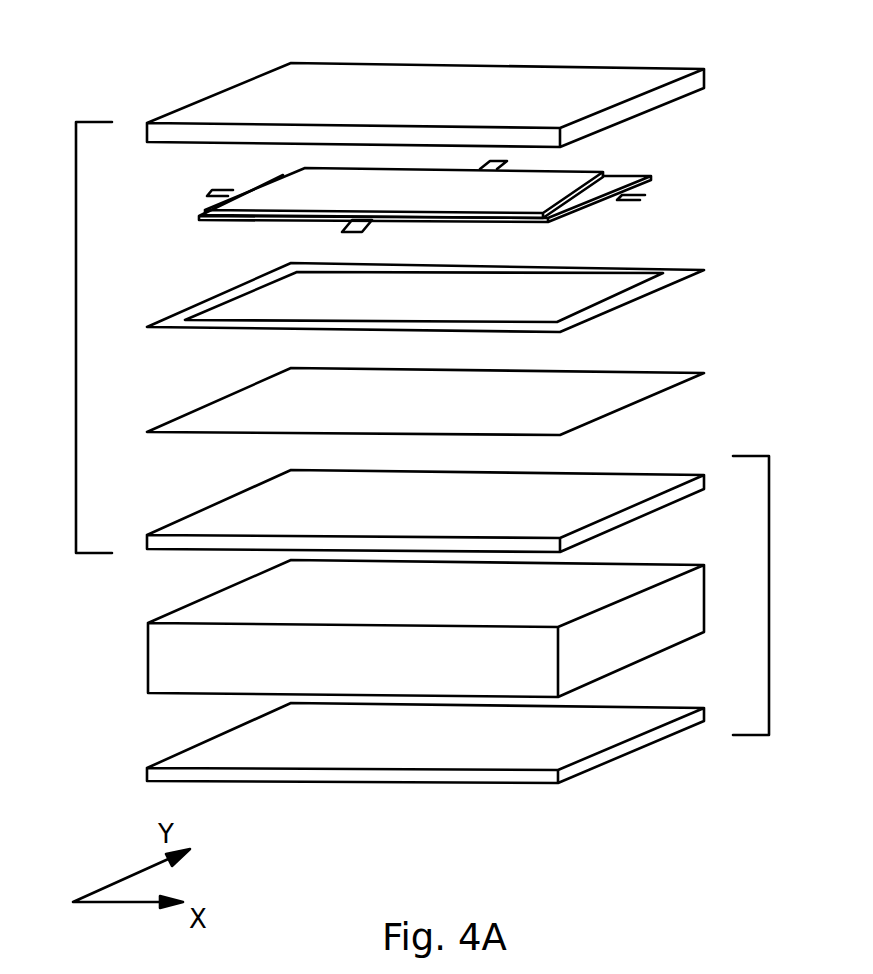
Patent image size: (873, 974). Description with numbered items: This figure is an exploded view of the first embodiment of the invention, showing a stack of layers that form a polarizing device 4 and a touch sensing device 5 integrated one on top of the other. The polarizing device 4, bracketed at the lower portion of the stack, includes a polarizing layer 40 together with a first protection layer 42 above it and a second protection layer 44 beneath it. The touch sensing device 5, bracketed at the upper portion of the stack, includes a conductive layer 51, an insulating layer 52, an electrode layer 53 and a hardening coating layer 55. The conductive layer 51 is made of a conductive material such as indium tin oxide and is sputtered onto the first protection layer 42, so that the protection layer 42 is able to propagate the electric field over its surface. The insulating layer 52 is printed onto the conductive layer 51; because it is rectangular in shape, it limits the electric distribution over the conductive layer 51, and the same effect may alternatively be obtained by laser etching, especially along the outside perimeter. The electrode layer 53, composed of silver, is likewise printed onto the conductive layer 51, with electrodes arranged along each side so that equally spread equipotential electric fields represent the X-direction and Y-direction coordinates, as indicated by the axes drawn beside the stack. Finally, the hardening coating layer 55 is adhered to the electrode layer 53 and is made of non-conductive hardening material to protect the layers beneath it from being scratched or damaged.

The hardening coating layer 55 is at (608, 78).
The electrode layer 53 is at (612, 173).
The insulating layer 52 is at (670, 268).
The conductive layer 51 is at (622, 373).
The first protection layer 42 is at (620, 485).
The polarizing layer 40 is at (173, 652).
The second protection layer 44 is at (190, 760).
The touch sensing device 5 is at (76, 310).
The polarizing device 4 is at (769, 592).